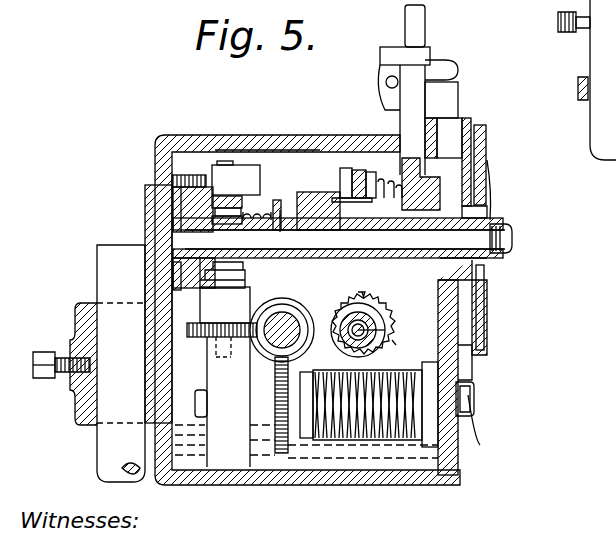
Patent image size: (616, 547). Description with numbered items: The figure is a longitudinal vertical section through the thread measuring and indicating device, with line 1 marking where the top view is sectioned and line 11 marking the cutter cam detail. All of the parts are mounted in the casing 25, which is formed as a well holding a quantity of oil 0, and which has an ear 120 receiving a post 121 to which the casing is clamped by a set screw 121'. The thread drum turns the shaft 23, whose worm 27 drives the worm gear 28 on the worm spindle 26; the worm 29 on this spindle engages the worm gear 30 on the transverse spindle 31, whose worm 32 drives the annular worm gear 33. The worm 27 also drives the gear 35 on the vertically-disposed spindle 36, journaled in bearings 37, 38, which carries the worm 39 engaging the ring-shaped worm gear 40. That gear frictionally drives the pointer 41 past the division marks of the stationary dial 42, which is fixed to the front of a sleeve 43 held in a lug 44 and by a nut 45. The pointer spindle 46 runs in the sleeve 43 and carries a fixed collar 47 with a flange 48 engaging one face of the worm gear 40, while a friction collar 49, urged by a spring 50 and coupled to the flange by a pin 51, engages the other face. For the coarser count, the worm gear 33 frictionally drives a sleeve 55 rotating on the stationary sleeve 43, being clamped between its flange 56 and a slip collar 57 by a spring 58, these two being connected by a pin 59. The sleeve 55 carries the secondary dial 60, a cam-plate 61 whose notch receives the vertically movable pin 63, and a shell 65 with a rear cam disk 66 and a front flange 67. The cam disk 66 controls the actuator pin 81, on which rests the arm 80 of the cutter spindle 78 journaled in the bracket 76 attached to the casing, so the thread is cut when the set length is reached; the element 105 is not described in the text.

The section line 1 is at (153, 200).
The pin 51 is at (205, 182).
The worm gear 40 is at (248, 178).
The vertically-disposed spindle 36 is at (222, 158).
The friction collar 49 is at (228, 200).
The lug 44 is at (308, 190).
The worm 39 is at (284, 204).
The bearing 37 is at (263, 178).
The flange 56 is at (345, 168).
The worm gear 33 is at (358, 170).
The pin 59 is at (338, 196).
The slip collar 57 is at (372, 170).
The spring 58 is at (390, 184).
The sleeve 43 is at (480, 236).
The fixed collar 47 is at (212, 257).
The spindle 46 is at (512, 232).
The nut 45 is at (490, 256).
The flange 48 is at (200, 266).
The spring 50 is at (225, 305).
The gear 35 is at (217, 345).
The worm 27 is at (260, 335).
The bearing 38 is at (192, 395).
The shaft 23 is at (282, 325).
The transverse spindle 31 is at (340, 320).
The worm 32 is at (386, 328).
The worm gear 30 is at (411, 349).
The worm 29 is at (358, 440).
The worm gear 28 is at (282, 460).
The oil 0 is at (240, 478).
The cam-plate 61 is at (486, 302).
The casing 25 is at (468, 366).
The worm spindle 26 is at (474, 398).
The section line 11 is at (483, 420).
The post 121 is at (121, 363).
The ear 120 is at (85, 418).
The set screw 121' is at (59, 338).
The cutter spindle 78 is at (428, 40).
The arm 80 is at (432, 58).
The bracket 76 is at (385, 70).
The actuator pin 81 is at (458, 74).
The pin 63 is at (402, 73).
The arm 105 is at (535, 0).
The flange 67 is at (462, 125).
The sleeve 55 is at (472, 135).
The secondary dial 60 is at (486, 150).
The shell 65 is at (486, 165).
The stationary dial 42 is at (490, 190).
The pointer 41 is at (485, 205).
The cam disk 66 is at (498, 208).